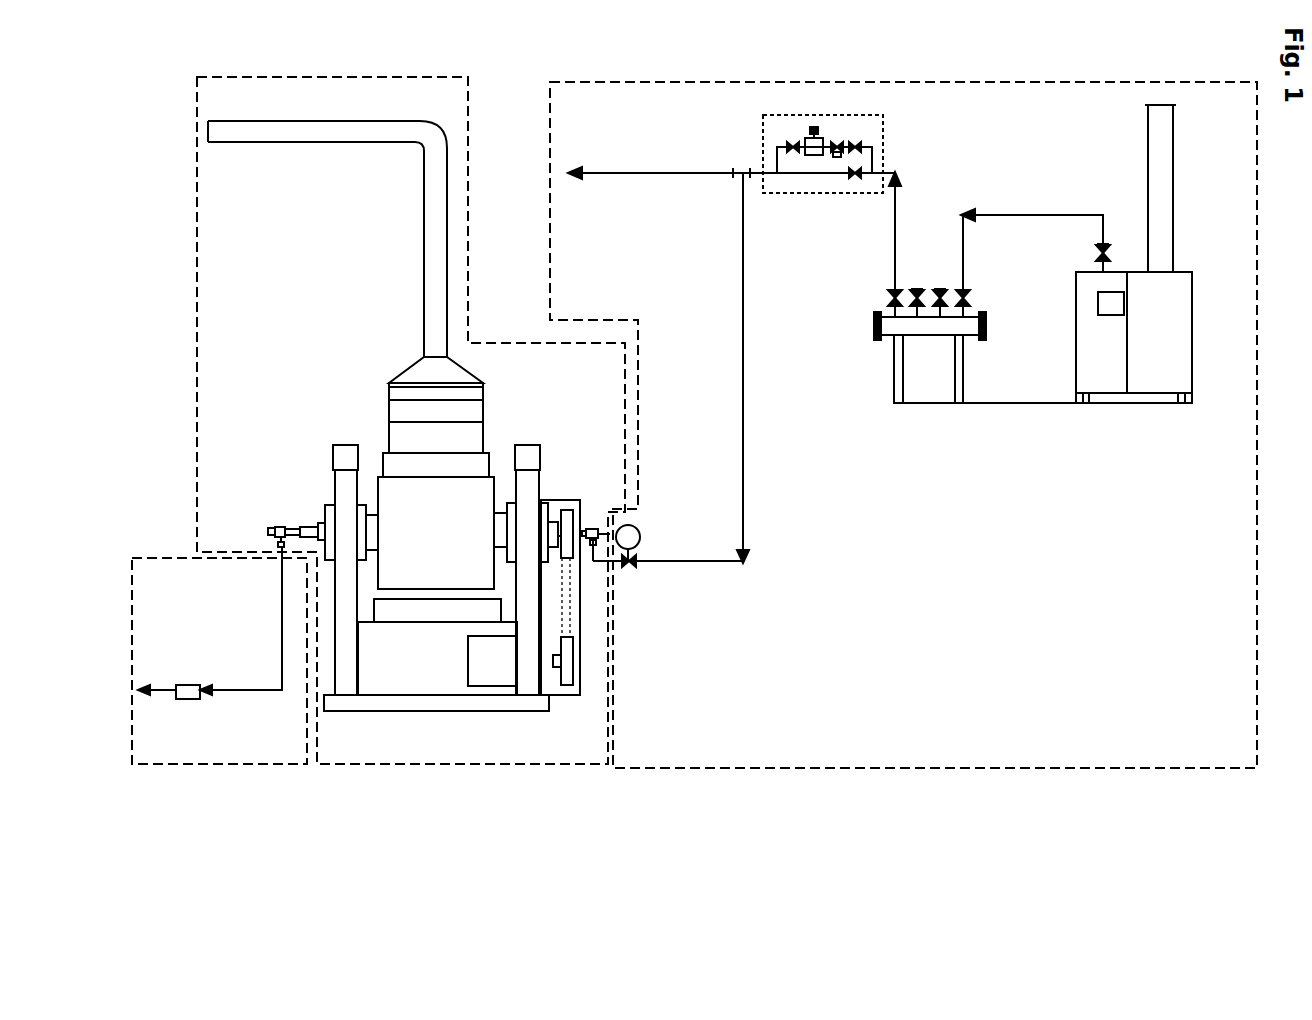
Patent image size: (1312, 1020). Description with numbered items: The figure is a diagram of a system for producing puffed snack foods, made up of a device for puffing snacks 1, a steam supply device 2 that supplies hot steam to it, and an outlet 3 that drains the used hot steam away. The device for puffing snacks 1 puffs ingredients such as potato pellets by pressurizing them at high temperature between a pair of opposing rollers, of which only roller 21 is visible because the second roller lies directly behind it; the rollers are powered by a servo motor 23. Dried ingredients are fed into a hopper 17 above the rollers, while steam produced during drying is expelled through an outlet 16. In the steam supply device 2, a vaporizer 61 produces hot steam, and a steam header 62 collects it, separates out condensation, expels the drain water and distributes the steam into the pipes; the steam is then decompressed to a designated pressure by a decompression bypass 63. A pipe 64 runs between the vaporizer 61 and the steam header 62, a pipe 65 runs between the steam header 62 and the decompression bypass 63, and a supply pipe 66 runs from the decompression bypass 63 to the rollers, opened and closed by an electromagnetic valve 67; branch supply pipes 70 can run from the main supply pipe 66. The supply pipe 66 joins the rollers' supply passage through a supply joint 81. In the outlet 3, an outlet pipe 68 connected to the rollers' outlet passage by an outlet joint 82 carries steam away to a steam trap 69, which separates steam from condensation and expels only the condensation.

The device for puffing snacks 1 is at (197, 95).
The steam supply device 2 is at (550, 88).
The outlet 3 is at (155, 558).
The outlet 16 is at (424, 287).
The hopper 17 is at (486, 436).
The roller 21 is at (388, 492).
The servo motor 23 is at (490, 678).
The vaporizer 61 is at (1192, 298).
The steam header 62 is at (875, 330).
The decompression bypass 63 is at (835, 115).
The pipe 64 is at (1045, 212).
The pipe 65 is at (895, 245).
The supply pipe 66 is at (700, 566).
The electromagnetic valve 67 is at (640, 528).
The outlet pipe 68 is at (282, 605).
The steam trap 69 is at (188, 700).
The branch supply pipe 70 is at (662, 170).
The supply joint 81 is at (596, 526).
The outlet joint 82 is at (280, 527).